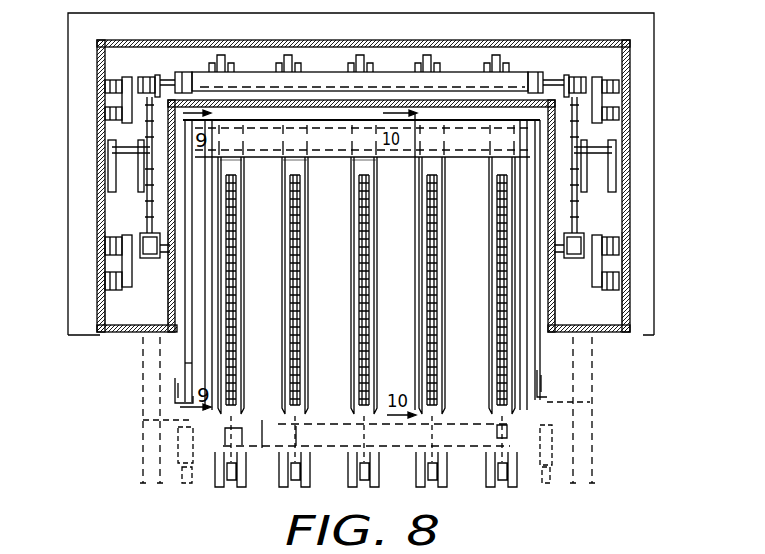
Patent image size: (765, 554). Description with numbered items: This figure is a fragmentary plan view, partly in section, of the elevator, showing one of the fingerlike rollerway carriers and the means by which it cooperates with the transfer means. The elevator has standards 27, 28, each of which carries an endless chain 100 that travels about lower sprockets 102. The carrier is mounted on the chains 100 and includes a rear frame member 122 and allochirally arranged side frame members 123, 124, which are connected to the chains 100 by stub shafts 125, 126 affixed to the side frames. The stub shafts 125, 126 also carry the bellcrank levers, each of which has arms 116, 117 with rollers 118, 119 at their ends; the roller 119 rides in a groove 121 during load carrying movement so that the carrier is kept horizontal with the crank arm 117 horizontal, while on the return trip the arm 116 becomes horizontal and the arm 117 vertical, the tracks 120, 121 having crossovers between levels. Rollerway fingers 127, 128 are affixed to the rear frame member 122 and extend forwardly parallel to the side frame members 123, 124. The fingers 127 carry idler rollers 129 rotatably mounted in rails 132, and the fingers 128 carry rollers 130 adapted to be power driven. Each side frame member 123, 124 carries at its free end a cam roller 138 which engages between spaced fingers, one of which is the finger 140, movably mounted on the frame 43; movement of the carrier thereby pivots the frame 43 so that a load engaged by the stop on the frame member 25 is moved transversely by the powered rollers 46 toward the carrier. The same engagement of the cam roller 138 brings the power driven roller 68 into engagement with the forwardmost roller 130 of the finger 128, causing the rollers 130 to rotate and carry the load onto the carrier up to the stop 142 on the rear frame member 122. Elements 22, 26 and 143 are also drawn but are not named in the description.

The frame 22 is at (607, 438).
The frame member 25 is at (590, 418).
The rod 26 is at (143, 443).
The standard 27 is at (105, 348).
The standard 28 is at (643, 338).
The frame 43 is at (178, 476).
The rollers 46 is at (332, 440).
The power driven roller 68 is at (332, 472).
The endless chain 100 is at (163, 82).
The lower sprockets 102 is at (150, 155).
The arm 116 is at (127, 97).
The crank arm 117 is at (133, 276).
The roller 118 is at (125, 242).
The roller 119 is at (363, 278).
The track 120 is at (100, 116).
The groove 121 is at (100, 93).
The rear frame member 122 is at (318, 157).
The side frame member 123 is at (172, 352).
The side frame member 124 is at (558, 355).
The stub shaft 125 is at (127, 255).
The stub shaft 126 is at (557, 255).
The rollerway fingers 127 is at (242, 298).
The rollerway fingers 128 is at (308, 288).
The idler rollers 129 is at (237, 267).
The rollers 130 is at (298, 265).
The rails 132 is at (237, 162).
The cam roller 138 is at (175, 385).
The finger 140 is at (143, 420).
The stop 142 is at (392, 158).
The clip 143 is at (452, 452).